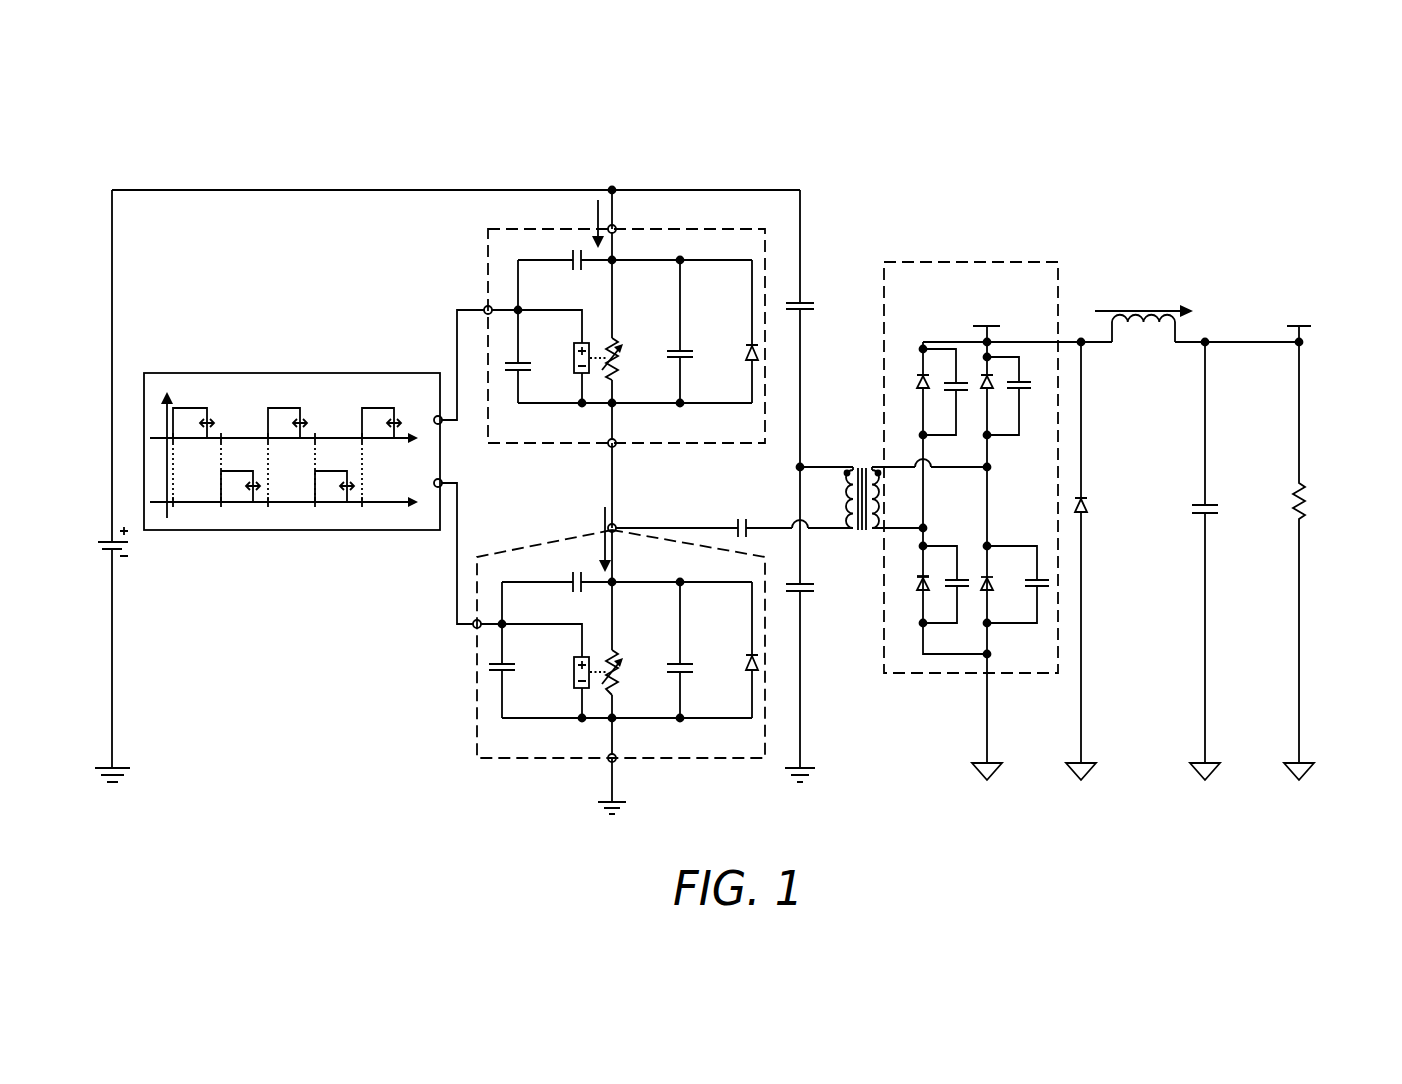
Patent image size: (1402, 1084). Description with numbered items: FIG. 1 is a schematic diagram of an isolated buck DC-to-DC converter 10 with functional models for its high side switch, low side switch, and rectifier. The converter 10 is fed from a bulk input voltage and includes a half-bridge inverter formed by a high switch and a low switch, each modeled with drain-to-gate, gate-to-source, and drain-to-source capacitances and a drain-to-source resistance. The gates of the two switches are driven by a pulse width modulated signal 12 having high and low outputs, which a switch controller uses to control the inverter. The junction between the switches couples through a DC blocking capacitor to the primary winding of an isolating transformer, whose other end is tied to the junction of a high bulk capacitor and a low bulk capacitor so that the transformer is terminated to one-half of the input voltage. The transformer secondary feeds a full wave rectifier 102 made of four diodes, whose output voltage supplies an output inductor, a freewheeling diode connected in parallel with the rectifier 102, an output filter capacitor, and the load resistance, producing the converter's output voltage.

The isolated buck DC-to-DC converter 10 is at (208, 140).
The pulse width modulated signal 12 is at (248, 364).
The full wave rectifier 102 is at (938, 262).